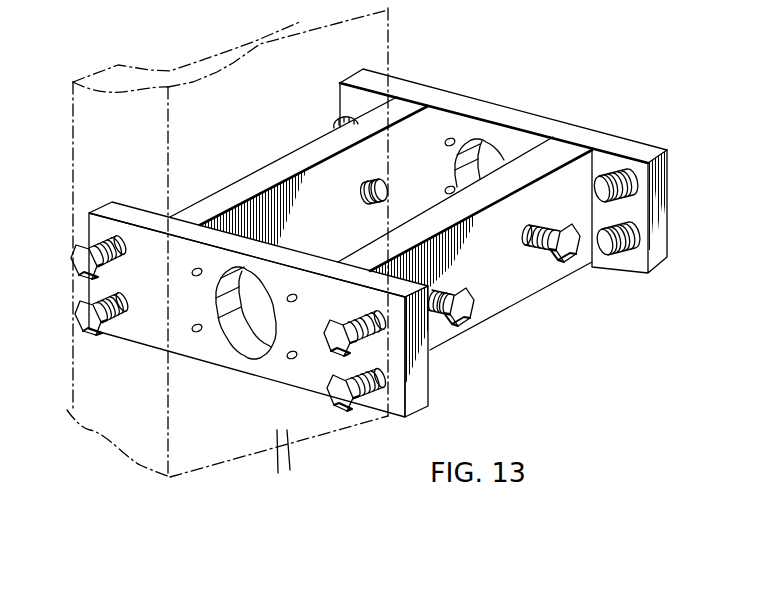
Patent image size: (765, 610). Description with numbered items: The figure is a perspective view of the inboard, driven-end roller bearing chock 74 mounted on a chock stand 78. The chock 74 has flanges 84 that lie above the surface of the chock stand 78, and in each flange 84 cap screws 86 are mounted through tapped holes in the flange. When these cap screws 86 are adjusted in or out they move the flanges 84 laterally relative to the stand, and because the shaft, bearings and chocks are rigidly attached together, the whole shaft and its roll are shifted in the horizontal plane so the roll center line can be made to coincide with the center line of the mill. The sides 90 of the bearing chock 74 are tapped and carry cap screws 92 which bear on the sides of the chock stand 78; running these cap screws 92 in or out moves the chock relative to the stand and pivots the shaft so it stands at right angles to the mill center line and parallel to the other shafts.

The inboard chock 74 is at (307, 388).
The chock stand 78 is at (270, 128).
The flange 84 is at (148, 336).
The cap screw 86 is at (78, 321).
The side of bearing chock 90 is at (344, 220).
The cap screw 92 is at (384, 184).